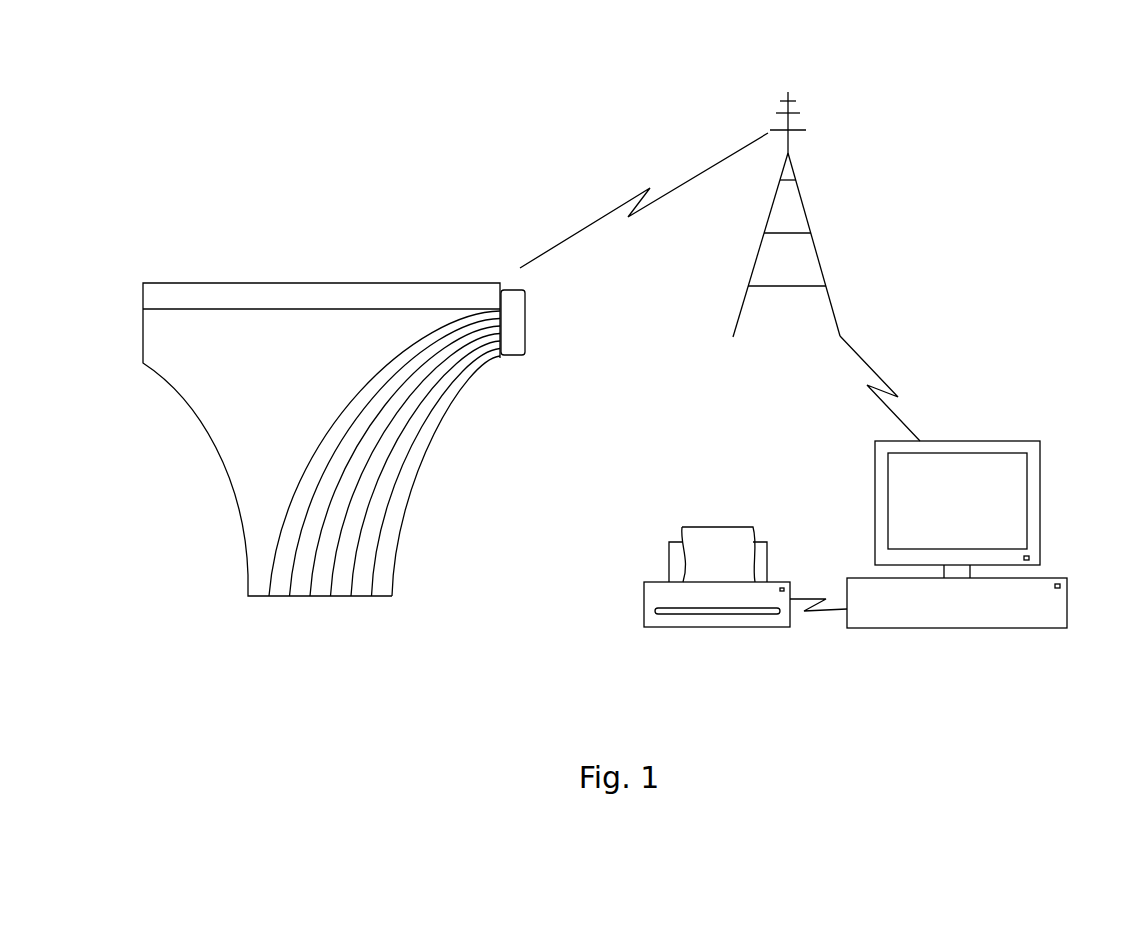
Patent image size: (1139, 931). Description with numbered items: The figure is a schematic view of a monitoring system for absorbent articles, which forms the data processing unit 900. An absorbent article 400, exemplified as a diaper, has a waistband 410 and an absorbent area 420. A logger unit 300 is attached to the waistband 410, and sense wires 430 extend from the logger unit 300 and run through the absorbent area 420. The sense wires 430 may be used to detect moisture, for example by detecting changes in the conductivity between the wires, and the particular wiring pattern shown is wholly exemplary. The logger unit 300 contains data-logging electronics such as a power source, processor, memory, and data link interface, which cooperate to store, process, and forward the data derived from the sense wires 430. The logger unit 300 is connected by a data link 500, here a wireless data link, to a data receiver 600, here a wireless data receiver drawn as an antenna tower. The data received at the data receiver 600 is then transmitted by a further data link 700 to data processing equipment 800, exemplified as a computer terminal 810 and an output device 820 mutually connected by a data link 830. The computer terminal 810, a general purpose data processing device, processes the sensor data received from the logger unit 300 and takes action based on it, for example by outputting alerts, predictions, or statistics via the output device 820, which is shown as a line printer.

The data processing unit 900 is at (955, 96).
The absorbent article 400 is at (92, 305).
The waistband 410 is at (337, 287).
The absorbent area 420 is at (232, 415).
The sense wires 430 is at (248, 603).
The logger unit 300 is at (525, 360).
The data link 500 is at (697, 173).
The data receiver 600 is at (818, 251).
The further data link 700 is at (880, 373).
The data processing equipment 800 is at (862, 678).
The computer terminal 810 is at (958, 628).
The output device 820 is at (715, 627).
The data link 830 is at (818, 598).